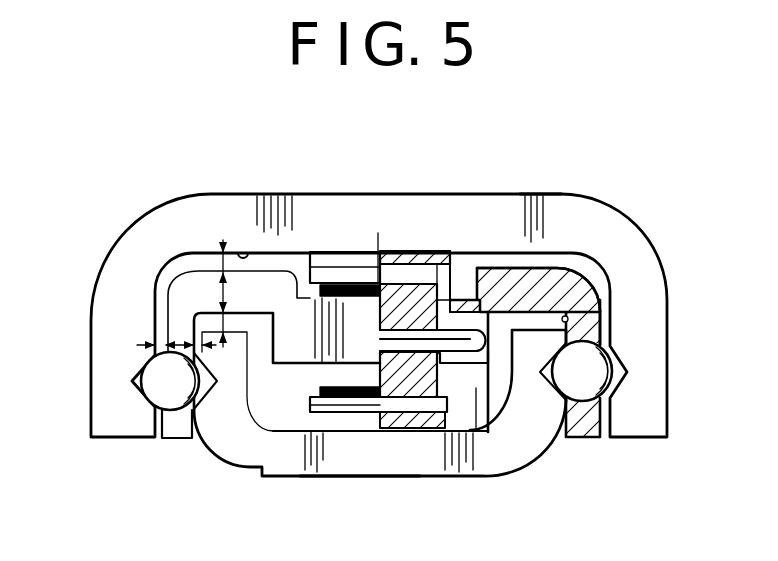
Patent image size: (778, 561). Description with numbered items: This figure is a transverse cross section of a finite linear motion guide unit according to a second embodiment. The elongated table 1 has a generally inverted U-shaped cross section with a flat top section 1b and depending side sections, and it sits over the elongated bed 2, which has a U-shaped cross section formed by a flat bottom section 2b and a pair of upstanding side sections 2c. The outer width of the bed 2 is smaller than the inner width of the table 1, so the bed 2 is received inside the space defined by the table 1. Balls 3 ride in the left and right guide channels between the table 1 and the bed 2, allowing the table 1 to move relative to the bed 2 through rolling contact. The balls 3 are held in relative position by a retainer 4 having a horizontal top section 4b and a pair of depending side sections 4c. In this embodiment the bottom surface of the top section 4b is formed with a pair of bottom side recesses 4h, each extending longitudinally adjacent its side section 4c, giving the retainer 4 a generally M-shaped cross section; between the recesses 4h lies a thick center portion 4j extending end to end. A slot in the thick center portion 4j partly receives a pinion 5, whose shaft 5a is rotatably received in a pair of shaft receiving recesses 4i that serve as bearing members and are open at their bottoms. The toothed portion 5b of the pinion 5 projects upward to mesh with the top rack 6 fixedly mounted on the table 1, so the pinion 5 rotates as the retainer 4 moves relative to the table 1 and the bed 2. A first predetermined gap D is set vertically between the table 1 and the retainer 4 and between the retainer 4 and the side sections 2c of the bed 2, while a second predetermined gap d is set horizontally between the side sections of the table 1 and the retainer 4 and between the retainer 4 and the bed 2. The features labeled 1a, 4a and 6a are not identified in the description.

The table 1 is at (166, 213).
The housing projection 1a is at (241, 250).
The flat top section 1b is at (555, 193).
The bed 2 is at (395, 453).
The flat bottom section 2b is at (360, 477).
The side sections of the bed 2c is at (212, 412).
The balls 3 is at (593, 363).
The retainer 4 is at (573, 289).
The yoke side wall 4a is at (606, 313).
The top horizontal section 4b is at (313, 265).
The side sections of the retainer 4c is at (166, 424).
The bottom side recesses 4h is at (232, 355).
The shaft receiving recesses 4i is at (464, 365).
The thick center portion 4j is at (291, 352).
The pinion gear 5 is at (411, 283).
The shaft 5a is at (483, 365).
The toothed portion 5b is at (428, 259).
The top rack 6 is at (357, 248).
The bearing outer ring 6a is at (311, 275).
The first predetermined gap D is at (222, 323).
The second predetermined gap d is at (190, 337).